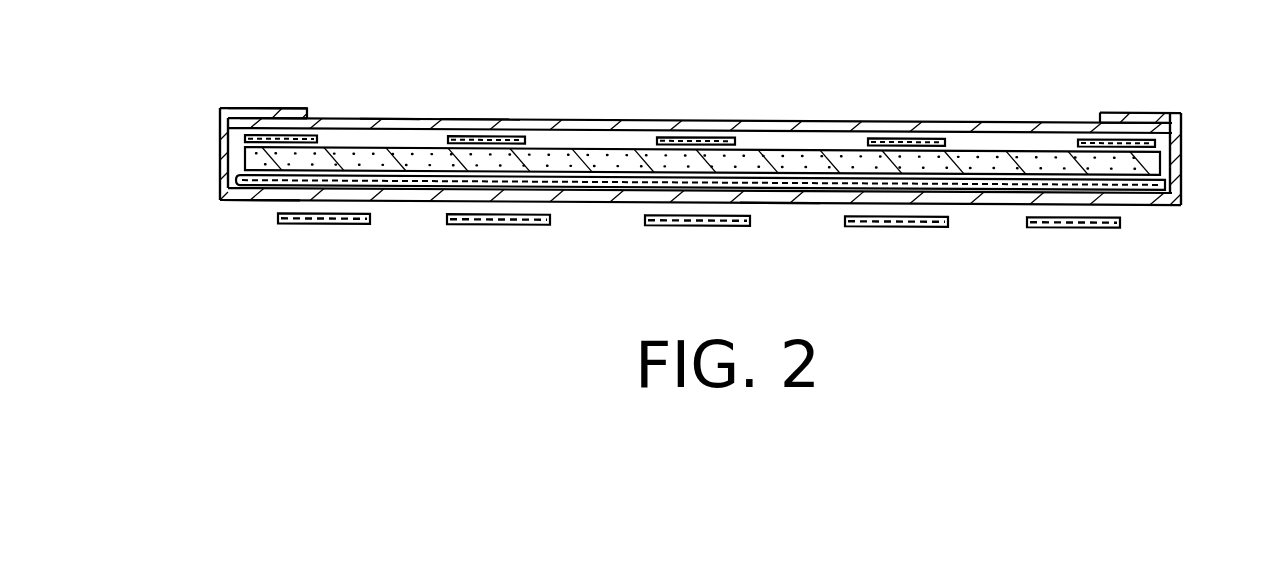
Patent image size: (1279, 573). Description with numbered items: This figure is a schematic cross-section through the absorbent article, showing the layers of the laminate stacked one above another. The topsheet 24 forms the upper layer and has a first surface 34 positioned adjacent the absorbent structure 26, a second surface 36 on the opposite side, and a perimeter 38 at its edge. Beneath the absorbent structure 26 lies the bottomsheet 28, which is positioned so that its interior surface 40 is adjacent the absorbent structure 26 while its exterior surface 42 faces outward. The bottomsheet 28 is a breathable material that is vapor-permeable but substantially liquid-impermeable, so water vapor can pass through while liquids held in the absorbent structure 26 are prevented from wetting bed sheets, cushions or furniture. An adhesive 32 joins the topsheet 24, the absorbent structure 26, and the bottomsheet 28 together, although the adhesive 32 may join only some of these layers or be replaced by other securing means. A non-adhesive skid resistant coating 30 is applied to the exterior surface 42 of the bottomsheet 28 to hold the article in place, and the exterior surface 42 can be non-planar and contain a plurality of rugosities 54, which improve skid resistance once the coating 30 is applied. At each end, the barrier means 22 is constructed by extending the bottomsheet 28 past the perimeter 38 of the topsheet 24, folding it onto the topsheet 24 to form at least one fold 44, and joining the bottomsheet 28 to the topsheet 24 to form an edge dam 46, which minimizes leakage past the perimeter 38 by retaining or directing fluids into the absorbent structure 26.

The barrier means 22 is at (250, 107).
The topsheet 24 is at (812, 120).
The absorbent structure 26 is at (1165, 159).
The bottomsheet 28 is at (1152, 207).
The non-adhesive skid resistant coating 30 is at (1076, 232).
The adhesive 32 is at (223, 170).
The first surface 34 is at (388, 124).
The second surface 36 is at (455, 118).
The perimeter 38 is at (1170, 118).
The interior surface 40 is at (818, 193).
The exterior surface 42 is at (778, 205).
The fold 44 is at (222, 107).
The edge dam 46 is at (303, 118).
The rugosities 54 is at (276, 107).